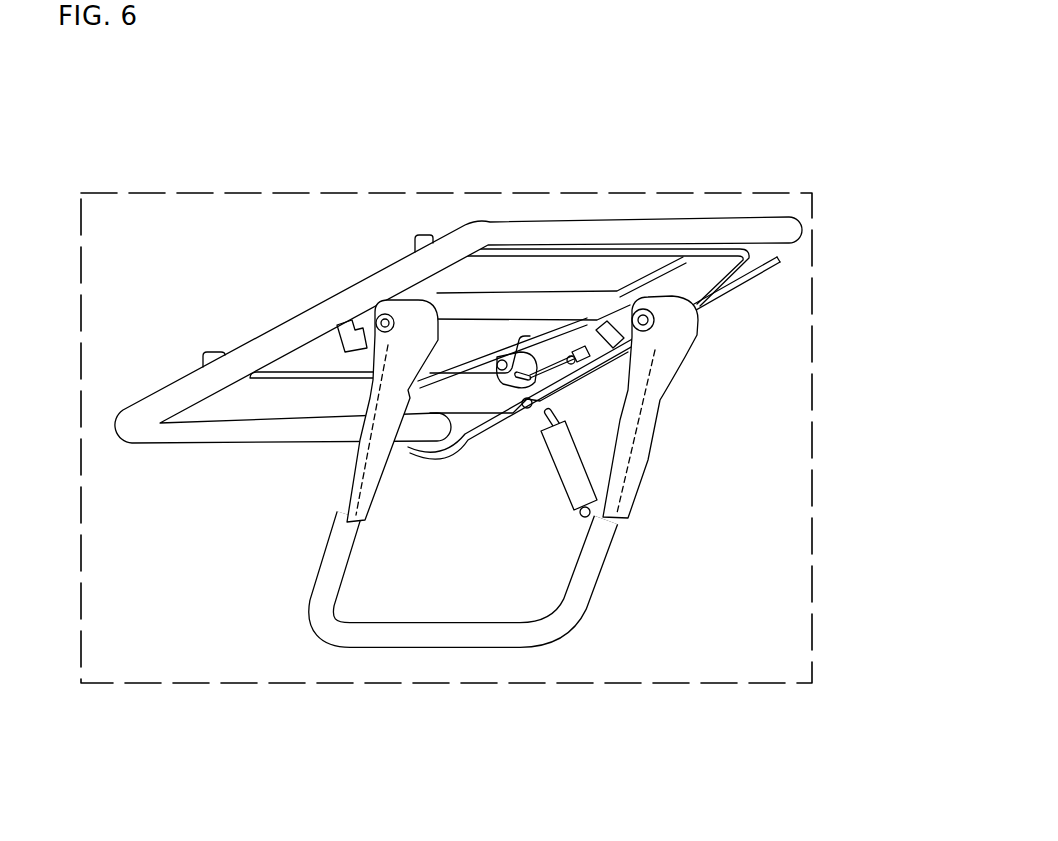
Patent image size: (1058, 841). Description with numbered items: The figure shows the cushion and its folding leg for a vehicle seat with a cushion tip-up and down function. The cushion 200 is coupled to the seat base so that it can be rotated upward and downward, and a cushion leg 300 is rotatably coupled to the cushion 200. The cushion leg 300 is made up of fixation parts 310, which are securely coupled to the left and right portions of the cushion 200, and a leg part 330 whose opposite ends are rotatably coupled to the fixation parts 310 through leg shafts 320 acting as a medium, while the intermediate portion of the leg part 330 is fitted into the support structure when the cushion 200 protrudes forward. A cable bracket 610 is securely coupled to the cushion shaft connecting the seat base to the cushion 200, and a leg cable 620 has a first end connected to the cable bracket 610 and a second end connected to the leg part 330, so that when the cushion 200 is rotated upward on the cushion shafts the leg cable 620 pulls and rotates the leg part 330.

The cushion 200 is at (450, 243).
The cushion leg 300 is at (630, 452).
The fixation part 310 is at (343, 323).
The leg shaft 320 is at (383, 314).
The leg part 330 is at (596, 563).
The cable bracket 610 is at (508, 383).
The leg cable 620 is at (541, 352).